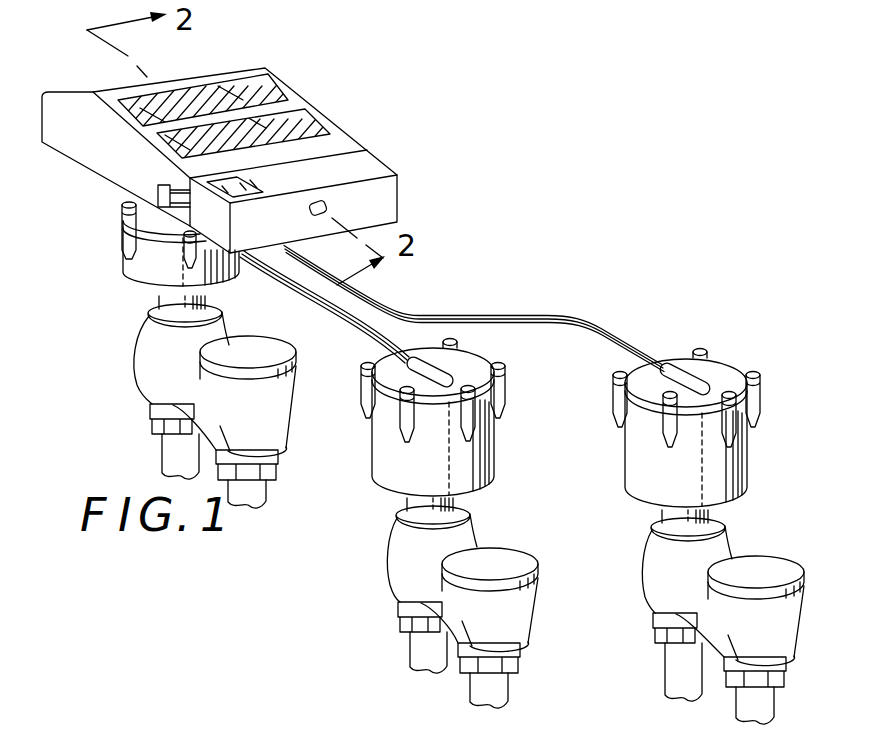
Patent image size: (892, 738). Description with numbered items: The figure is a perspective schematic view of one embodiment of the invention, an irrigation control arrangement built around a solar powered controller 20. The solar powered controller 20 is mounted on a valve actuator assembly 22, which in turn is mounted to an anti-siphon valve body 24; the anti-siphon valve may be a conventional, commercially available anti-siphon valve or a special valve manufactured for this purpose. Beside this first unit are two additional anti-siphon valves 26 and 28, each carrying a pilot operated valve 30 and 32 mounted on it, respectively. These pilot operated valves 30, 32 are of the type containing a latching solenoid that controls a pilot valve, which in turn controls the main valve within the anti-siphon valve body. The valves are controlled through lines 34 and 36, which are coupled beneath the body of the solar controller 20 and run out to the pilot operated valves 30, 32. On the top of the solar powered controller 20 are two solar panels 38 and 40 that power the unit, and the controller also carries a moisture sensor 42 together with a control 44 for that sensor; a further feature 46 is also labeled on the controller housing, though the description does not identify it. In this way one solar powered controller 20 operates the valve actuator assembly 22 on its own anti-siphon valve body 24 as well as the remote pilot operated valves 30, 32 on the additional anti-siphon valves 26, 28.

The solar powered controller 20 is at (340, 127).
The valve actuator assembly 22 is at (152, 262).
The anti-siphon valve body 24 is at (152, 368).
The anti-siphon valve 26 is at (407, 564).
The anti-siphon valve 28 is at (660, 588).
The pilot operated valve 30 is at (490, 432).
The pilot operated valve 32 is at (743, 428).
The line 34 is at (340, 314).
The line 36 is at (437, 317).
The solar panel 38 is at (240, 97).
The solar panel 40 is at (300, 117).
The moisture sensor 42 is at (357, 173).
The control 44 is at (326, 204).
The top surface of housing 46 is at (277, 152).